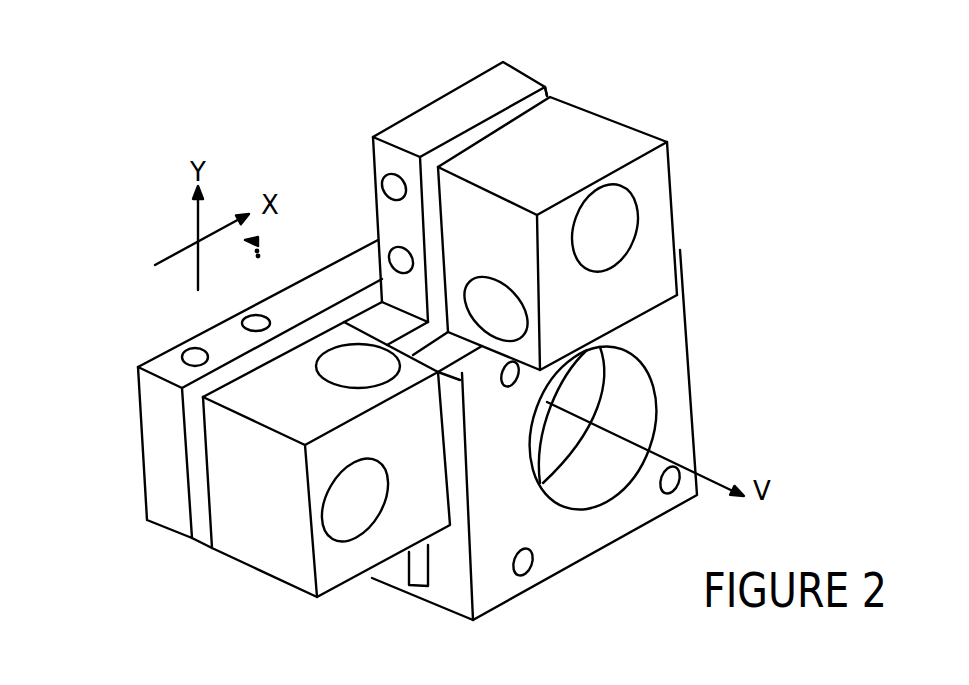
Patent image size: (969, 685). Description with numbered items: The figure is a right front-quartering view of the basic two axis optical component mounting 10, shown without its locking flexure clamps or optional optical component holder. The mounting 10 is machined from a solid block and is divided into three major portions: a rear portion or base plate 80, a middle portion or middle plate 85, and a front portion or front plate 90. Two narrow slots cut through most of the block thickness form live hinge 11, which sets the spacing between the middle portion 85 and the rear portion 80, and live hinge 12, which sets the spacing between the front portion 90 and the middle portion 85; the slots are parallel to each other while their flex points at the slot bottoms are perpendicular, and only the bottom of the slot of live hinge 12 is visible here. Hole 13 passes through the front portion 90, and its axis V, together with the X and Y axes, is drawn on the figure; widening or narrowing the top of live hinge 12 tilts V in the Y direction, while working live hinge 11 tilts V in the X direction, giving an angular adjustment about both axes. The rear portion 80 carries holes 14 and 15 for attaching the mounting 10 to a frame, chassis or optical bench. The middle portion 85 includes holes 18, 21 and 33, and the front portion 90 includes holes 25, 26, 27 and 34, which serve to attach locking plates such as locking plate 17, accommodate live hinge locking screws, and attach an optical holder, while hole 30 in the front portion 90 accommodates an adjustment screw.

The optical component mounting 10 is at (680, 187).
The live hinge 11 is at (202, 547).
The live hinge 12 is at (555, 92).
The hole 13 is at (627, 400).
The hole 14 is at (195, 352).
The hole 15 is at (256, 316).
The locking plate 17 is at (385, 258).
The hole 18 is at (385, 182).
The hole 21 is at (347, 520).
The hole 25 is at (503, 387).
The hole 26 is at (523, 575).
The hole 27 is at (670, 494).
The hole 30 is at (617, 227).
The hole 33 is at (347, 370).
The hole 34 is at (485, 302).
The rear portion 80 is at (135, 442).
The middle portion 85 is at (504, 62).
The front portion 90 is at (648, 132).